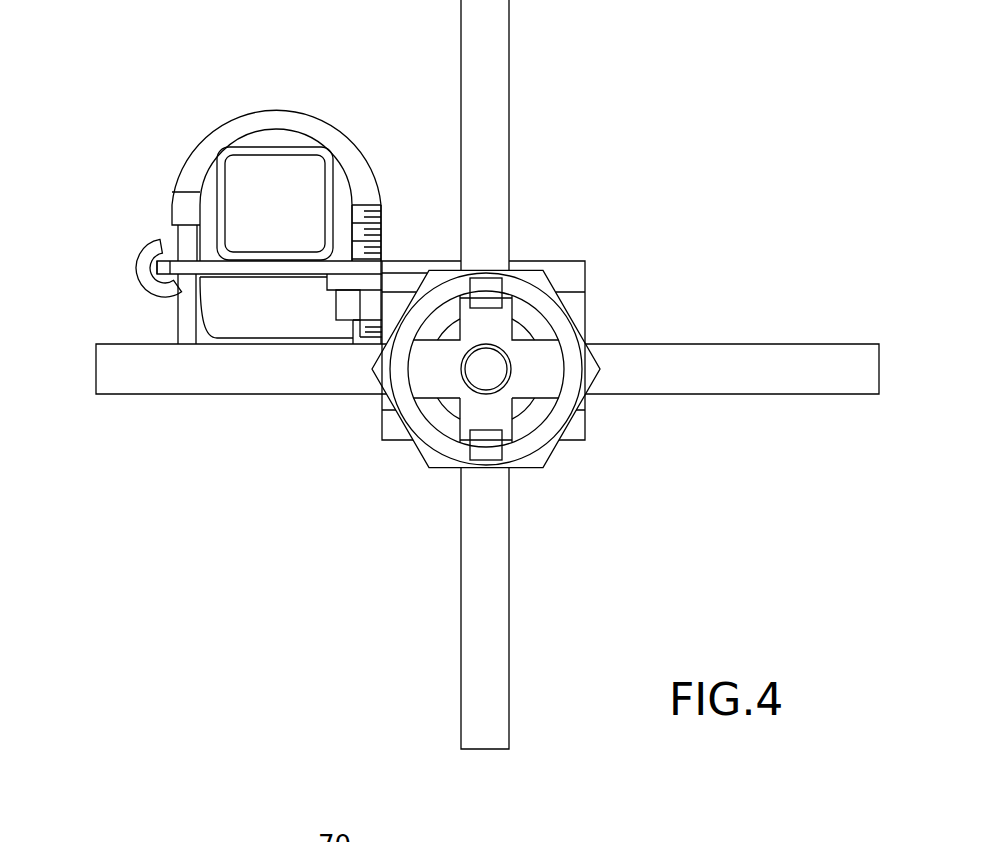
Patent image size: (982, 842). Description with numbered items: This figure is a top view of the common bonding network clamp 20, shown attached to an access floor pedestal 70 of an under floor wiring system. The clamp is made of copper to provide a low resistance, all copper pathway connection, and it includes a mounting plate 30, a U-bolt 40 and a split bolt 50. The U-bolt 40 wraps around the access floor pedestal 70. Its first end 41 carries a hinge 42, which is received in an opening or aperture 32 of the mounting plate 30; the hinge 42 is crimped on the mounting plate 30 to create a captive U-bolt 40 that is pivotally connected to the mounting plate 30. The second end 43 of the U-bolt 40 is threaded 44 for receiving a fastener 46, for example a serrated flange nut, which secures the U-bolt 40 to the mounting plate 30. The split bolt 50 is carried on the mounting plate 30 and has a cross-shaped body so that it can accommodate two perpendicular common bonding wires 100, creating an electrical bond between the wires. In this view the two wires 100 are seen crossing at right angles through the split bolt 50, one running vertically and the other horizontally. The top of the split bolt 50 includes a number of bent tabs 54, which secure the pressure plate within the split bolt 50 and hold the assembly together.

The common bonding network clamp 20 is at (599, 168).
The mounting plate 30 is at (202, 332).
The opening or aperture 32 is at (180, 283).
The U-bolt 40 is at (203, 128).
The first end 41 is at (183, 240).
The hinge 42 is at (147, 245).
The second end 43 is at (380, 247).
The threaded 44 is at (373, 218).
The fastener 46 is at (343, 303).
The split bolt 50 is at (541, 270).
The bent tabs 54 is at (483, 440).
The access floor pedestal 70 is at (285, 147).
The common bonding wires 100 is at (503, 85).